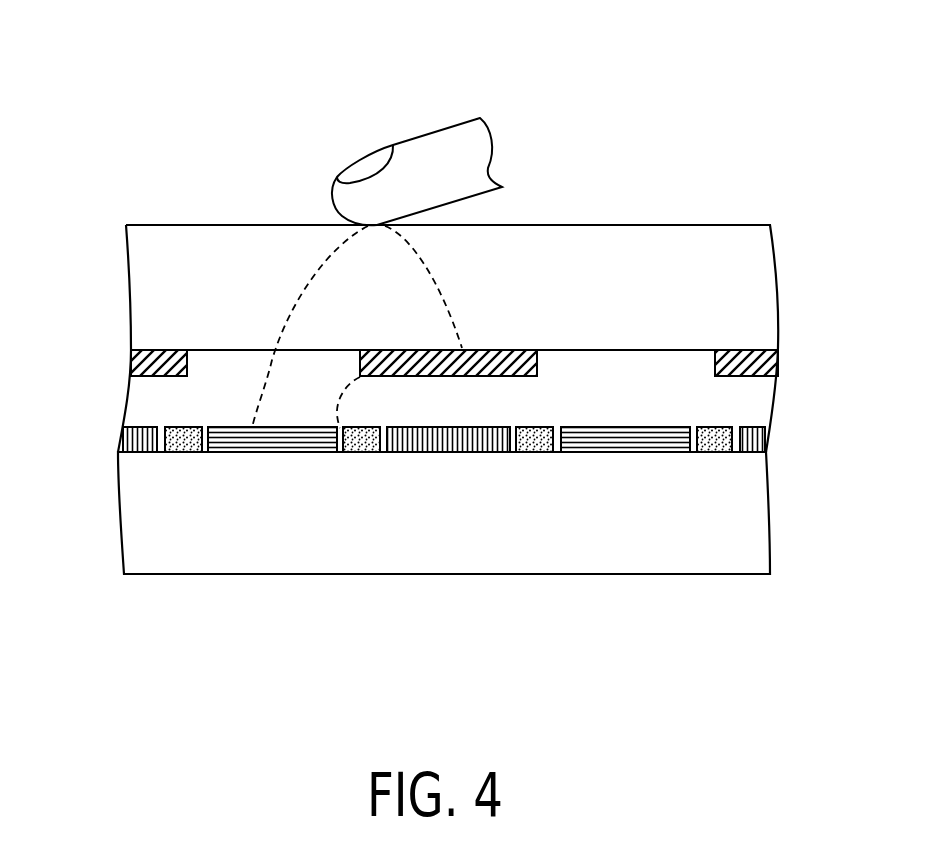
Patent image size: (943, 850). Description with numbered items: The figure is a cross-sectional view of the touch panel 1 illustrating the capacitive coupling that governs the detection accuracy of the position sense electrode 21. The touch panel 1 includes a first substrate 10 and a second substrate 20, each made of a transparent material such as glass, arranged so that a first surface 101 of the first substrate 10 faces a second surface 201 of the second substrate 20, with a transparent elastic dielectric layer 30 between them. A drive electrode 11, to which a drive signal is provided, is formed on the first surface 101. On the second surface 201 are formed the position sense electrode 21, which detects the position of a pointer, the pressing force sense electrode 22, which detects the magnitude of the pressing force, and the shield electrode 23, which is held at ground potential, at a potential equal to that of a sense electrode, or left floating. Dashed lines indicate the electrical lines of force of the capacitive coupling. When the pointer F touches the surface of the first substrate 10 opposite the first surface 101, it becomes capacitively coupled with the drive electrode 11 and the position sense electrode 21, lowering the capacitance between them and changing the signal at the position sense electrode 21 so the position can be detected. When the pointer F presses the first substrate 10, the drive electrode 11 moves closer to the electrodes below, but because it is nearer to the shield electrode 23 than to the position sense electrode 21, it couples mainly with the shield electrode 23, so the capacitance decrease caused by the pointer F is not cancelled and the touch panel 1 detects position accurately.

The touch panel 1 is at (797, 692).
The pointer F is at (440, 157).
The first substrate 10 is at (722, 247).
The drive electrode 11 is at (492, 348).
The dielectric layer 30 is at (147, 393).
The first surface 101 is at (695, 352).
The second substrate 20 is at (612, 550).
The second surface 201 is at (404, 505).
The position sense electrode 21 is at (250, 452).
The pressing force sense electrode 22 is at (447, 452).
The shield electrode 23 is at (358, 452).